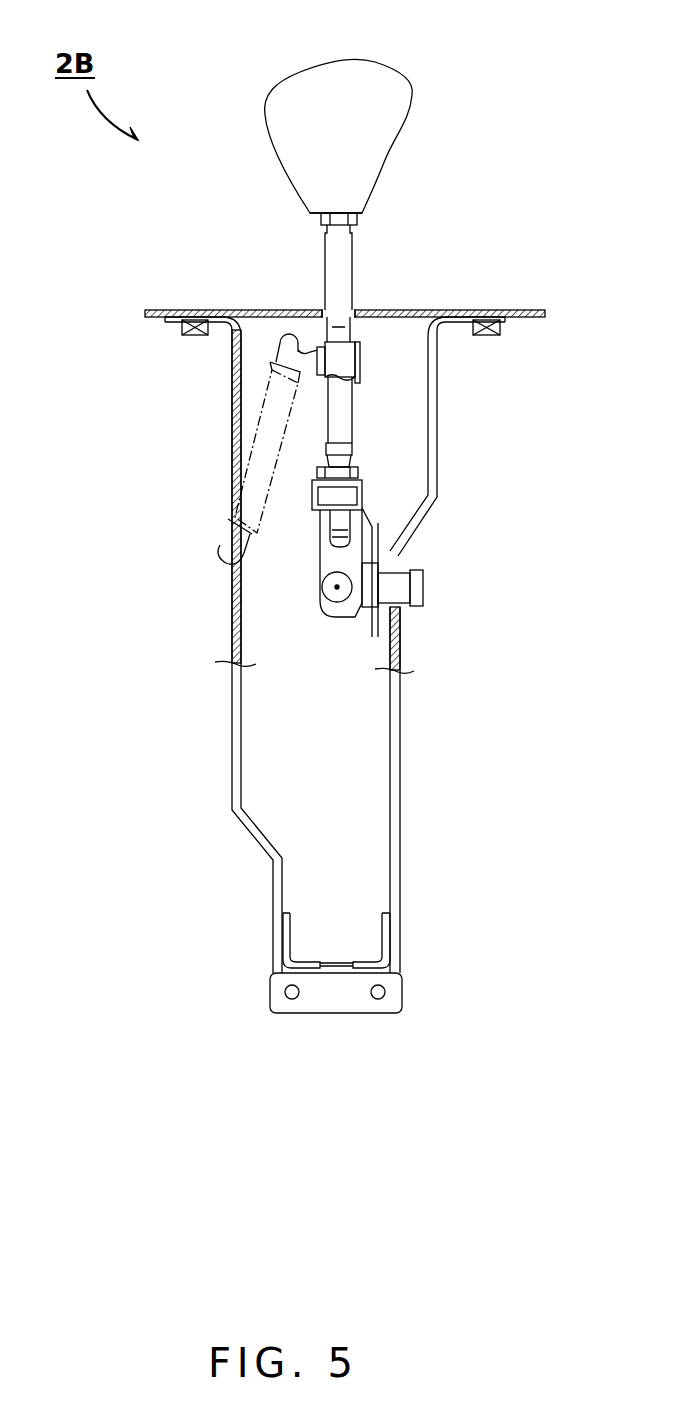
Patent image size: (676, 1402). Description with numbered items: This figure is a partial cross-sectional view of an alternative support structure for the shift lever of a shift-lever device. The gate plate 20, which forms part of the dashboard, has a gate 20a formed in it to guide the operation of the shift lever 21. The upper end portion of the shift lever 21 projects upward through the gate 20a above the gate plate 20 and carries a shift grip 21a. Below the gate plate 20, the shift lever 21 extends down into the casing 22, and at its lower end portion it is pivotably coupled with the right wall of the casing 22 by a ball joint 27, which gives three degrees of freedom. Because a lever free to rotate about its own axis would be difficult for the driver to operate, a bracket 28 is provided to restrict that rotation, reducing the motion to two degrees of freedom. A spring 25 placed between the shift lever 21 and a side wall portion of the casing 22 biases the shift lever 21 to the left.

The gate plate 20 is at (500, 310).
The gate 20a is at (362, 310).
The shift lever 21 is at (325, 273).
The shift grip 21a is at (407, 70).
The casing 22 is at (437, 405).
The spring 25 is at (245, 415).
The ball joint 27 is at (330, 618).
The bracket 28 is at (370, 507).